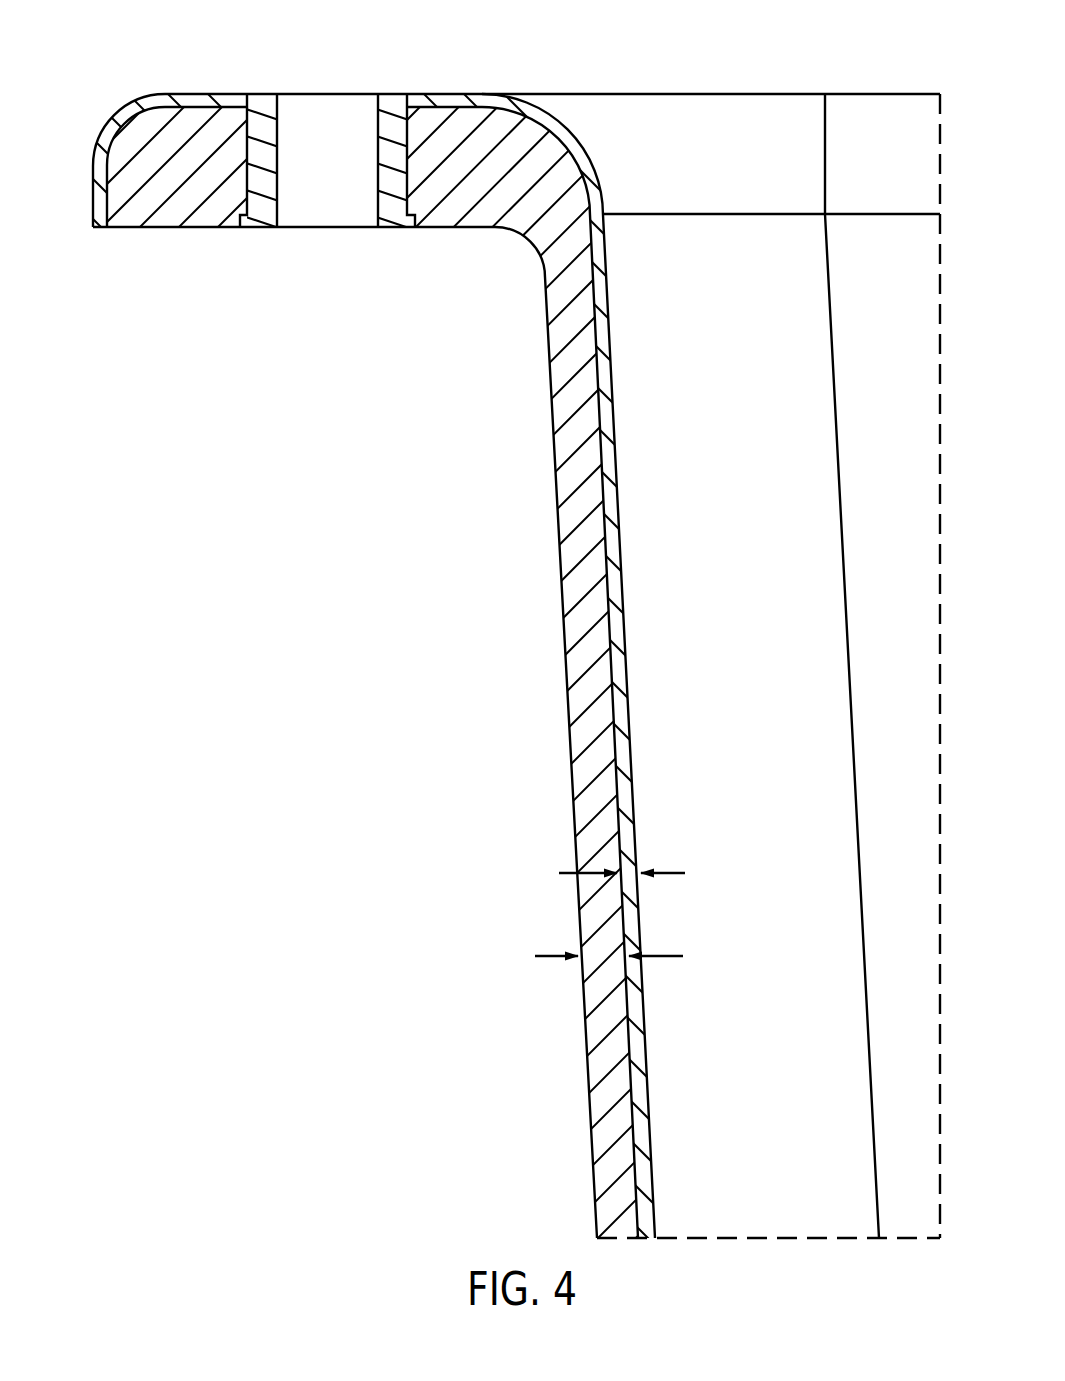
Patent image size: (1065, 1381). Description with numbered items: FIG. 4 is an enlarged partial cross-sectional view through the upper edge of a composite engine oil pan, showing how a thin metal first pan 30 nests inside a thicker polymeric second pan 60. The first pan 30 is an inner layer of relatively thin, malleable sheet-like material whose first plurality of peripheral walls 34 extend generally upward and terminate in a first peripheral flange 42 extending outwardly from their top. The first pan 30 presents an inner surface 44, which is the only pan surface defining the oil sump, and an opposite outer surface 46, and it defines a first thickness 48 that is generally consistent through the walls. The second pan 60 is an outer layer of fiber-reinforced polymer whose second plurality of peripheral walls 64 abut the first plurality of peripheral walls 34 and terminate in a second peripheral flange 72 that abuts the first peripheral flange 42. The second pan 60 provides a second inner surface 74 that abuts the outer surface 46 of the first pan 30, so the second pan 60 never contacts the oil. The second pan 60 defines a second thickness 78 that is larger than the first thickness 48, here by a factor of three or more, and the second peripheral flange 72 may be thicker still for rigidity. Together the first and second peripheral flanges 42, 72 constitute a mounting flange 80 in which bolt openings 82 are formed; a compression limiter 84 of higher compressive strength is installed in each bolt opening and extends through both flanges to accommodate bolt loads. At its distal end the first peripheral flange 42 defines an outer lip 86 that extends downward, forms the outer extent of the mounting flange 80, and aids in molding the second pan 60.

The first pan 30 is at (605, 303).
The first plurality of peripheral walls 34 is at (636, 793).
The first peripheral flange 42 is at (197, 96).
The inner surface 44 is at (628, 716).
The outer surface 46 is at (610, 697).
The first thickness 48 is at (665, 873).
The second pan 60 is at (546, 340).
The second plurality of peripheral walls 64 is at (566, 816).
The second peripheral flange 72 is at (167, 208).
The second inner surface 74 is at (598, 450).
The second thickness 78 is at (548, 958).
The mounting flange 80 is at (117, 101).
The bolt openings 82 is at (250, 153).
The compression limiter 84 is at (398, 228).
The outer lip 86 is at (93, 157).